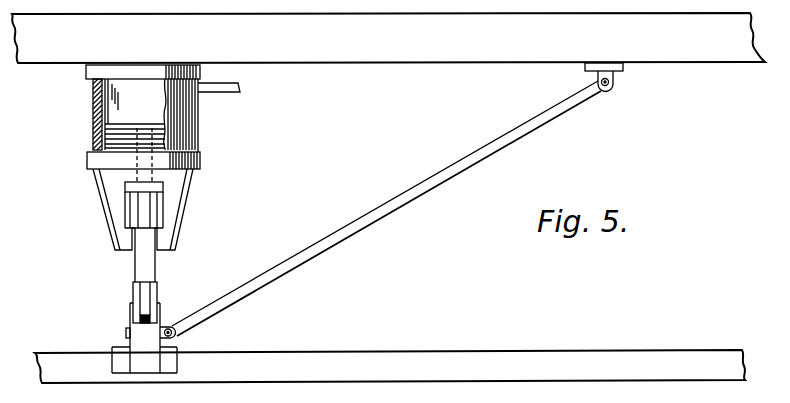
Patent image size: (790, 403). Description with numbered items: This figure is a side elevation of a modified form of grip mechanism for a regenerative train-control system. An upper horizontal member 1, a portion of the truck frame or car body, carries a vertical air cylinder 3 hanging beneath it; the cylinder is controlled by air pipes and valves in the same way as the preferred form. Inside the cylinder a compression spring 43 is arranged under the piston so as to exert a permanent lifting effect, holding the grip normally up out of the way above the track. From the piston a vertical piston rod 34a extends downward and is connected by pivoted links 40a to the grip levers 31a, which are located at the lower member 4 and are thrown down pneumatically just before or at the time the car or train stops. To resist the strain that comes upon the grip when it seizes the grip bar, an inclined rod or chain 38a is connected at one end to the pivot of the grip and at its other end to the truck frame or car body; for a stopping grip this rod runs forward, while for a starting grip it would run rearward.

The upper beam / frame member 1 is at (537, 50).
The lower rail / base member 4 is at (640, 354).
The cylinder 3 is at (152, 157).
The compression spring 43 is at (162, 147).
The piston rod 34a is at (146, 262).
The pivoted links 40a is at (147, 300).
The grip levers 31a is at (127, 356).
The rod or chain 38a is at (391, 200).